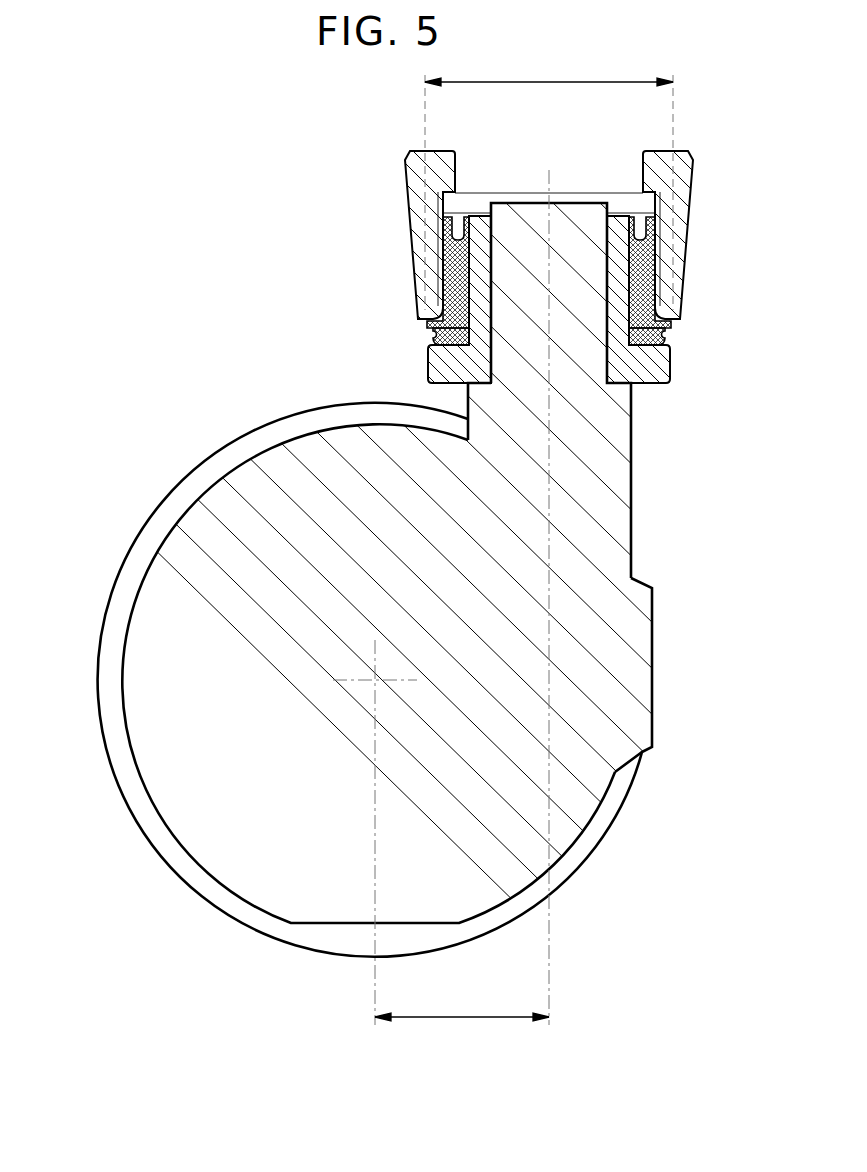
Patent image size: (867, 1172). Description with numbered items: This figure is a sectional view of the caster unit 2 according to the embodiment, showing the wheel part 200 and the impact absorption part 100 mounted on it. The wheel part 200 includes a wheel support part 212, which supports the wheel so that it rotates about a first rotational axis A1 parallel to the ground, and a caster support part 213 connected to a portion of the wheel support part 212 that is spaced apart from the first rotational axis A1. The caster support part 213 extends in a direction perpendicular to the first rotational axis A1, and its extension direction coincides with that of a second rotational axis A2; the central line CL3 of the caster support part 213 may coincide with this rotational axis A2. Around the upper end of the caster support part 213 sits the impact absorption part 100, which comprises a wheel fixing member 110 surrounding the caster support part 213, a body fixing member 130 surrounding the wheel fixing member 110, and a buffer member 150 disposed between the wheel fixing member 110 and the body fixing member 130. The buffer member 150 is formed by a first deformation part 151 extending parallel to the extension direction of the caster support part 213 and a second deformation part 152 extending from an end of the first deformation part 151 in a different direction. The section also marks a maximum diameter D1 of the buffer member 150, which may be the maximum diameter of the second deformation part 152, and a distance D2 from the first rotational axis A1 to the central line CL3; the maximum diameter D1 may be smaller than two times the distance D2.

The caster unit 2 is at (433, 586).
The impact absorption part 100 is at (433, 407).
The wheel fixing member 110 is at (659, 357).
The body fixing member 130 is at (681, 230).
The buffer member 150 is at (548, 285).
The first deformation part 151 is at (458, 272).
The second deformation part 152 is at (450, 333).
The wheel part 200 is at (433, 586).
The wheel support part 212 is at (510, 830).
The caster support part 213 is at (573, 330).
The first rotational axis A1 is at (375, 680).
The second rotational axis A2 is at (550, 552).
The central line of the caster support part CL3 is at (653, 597).
The maximum diameter of the buffer member D1 is at (549, 181).
The distance from the first rotational axis to the central line D2 is at (462, 1006).